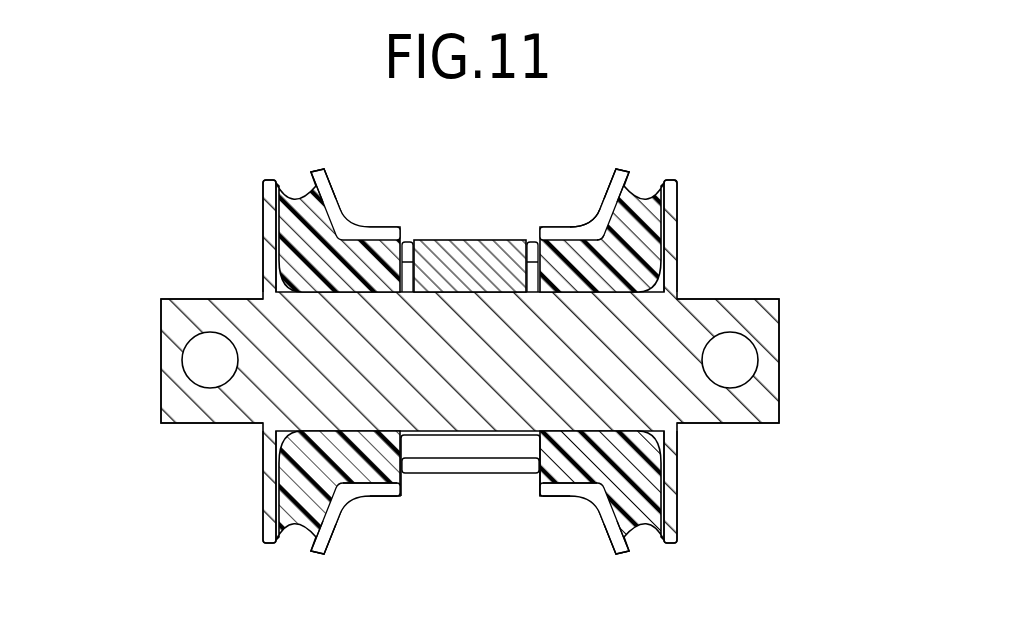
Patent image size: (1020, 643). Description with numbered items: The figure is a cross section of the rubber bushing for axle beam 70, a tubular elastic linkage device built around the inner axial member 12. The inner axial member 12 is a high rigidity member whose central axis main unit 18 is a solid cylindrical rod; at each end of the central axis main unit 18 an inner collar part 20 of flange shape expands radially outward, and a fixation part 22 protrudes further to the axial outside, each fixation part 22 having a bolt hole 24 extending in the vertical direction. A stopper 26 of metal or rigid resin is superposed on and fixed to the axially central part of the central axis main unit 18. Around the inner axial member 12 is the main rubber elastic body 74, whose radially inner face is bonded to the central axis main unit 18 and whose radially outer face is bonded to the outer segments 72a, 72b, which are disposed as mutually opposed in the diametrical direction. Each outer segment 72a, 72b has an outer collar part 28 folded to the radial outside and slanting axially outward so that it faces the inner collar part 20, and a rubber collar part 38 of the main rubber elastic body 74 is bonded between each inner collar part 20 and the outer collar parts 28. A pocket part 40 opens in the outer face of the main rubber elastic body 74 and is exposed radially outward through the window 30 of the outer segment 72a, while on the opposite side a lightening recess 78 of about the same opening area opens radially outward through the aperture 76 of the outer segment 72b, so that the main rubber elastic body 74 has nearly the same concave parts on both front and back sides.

The rubber bushing for axle beam 70 is at (470, 353).
The inner axial member 12 is at (697, 275).
The fixation part 22 is at (190, 314).
The bolt hole 24 is at (188, 358).
The inner collar part 20 is at (272, 504).
The rubber collar part 38 is at (296, 228).
The outer collar part 28 is at (322, 176).
The outer segment 72a is at (377, 228).
The outer segment 72b is at (581, 500).
The main rubber elastic body 74 is at (583, 236).
The aperture 76 is at (408, 500).
The lightening recess 78 is at (530, 484).
The pocket part 40 is at (410, 240).
The window 30 is at (534, 240).
The stopper 26 is at (468, 258).
The central axis main unit 18 is at (455, 378).